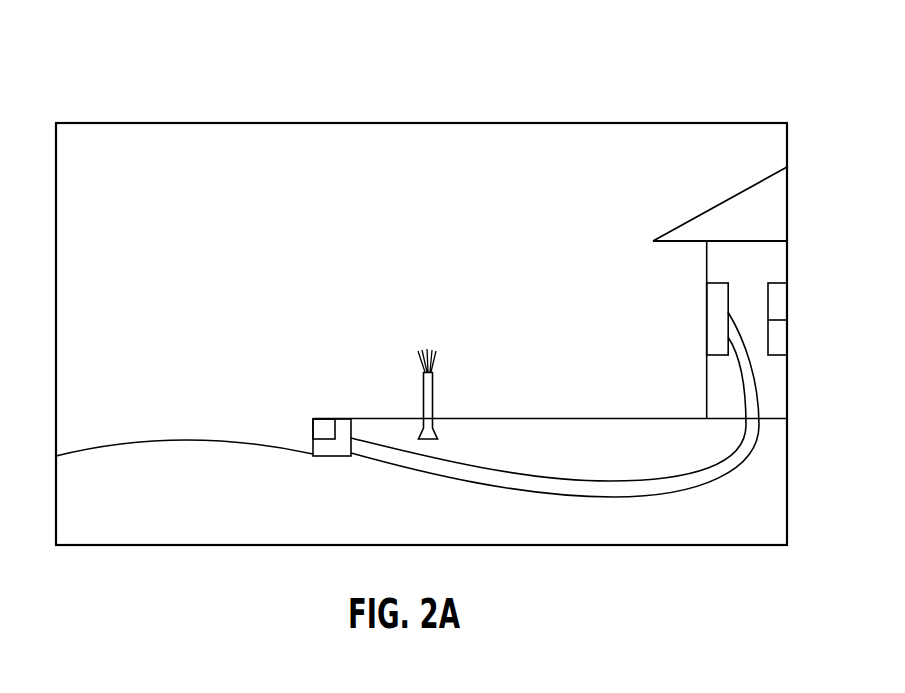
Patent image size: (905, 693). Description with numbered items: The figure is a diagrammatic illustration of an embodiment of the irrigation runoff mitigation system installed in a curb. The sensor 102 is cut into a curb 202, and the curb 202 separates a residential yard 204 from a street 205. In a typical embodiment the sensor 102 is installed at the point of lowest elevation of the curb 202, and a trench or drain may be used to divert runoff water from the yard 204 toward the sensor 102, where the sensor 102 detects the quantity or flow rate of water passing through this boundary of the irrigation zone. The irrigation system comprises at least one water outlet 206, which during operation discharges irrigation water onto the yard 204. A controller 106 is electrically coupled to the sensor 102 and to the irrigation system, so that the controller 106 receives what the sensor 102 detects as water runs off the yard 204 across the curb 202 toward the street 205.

The sensor 102 is at (333, 452).
The controller 106 is at (715, 320).
The curb 202 is at (323, 430).
The residential yard 204 is at (583, 442).
The street 205 is at (182, 452).
The water outlet 206 is at (428, 402).